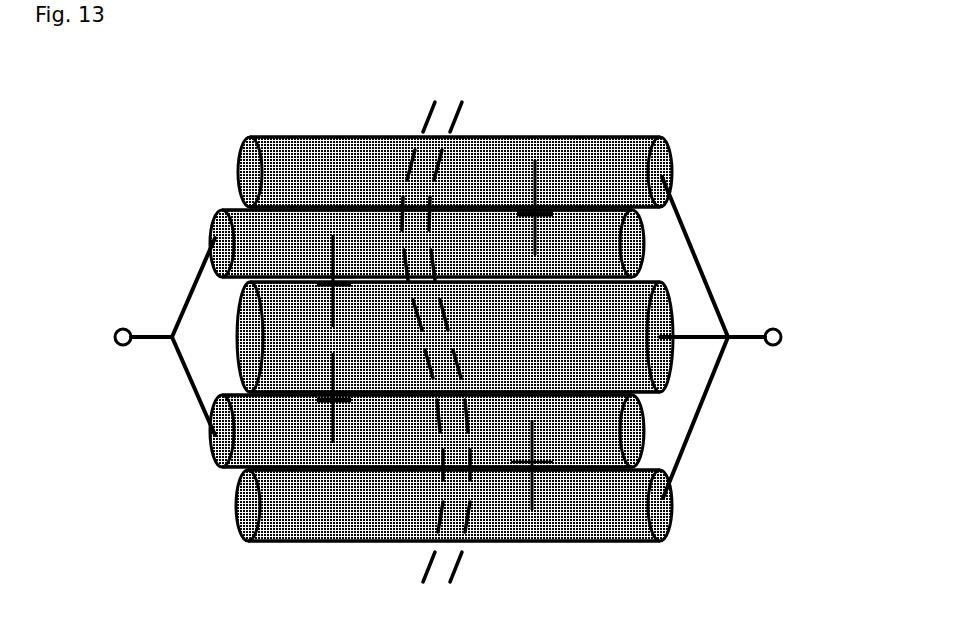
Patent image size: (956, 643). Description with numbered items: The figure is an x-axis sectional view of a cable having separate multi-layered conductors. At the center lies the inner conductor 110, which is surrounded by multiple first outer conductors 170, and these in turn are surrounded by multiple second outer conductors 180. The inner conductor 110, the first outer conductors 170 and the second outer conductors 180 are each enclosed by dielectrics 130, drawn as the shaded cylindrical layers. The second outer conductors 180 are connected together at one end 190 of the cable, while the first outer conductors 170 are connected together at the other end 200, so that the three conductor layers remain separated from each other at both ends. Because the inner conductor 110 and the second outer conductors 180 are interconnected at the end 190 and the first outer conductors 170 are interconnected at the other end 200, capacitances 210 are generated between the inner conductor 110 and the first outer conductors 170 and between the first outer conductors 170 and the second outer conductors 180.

The inner conductor 110 is at (674, 304).
The dielectrics 130 is at (289, 136).
The first outer conductors 170 is at (635, 227).
The second outer conductors 180 is at (672, 151).
The end of the cable 190 is at (782, 332).
The other end of the cable 200 is at (113, 338).
The capacitances 210 is at (536, 158).